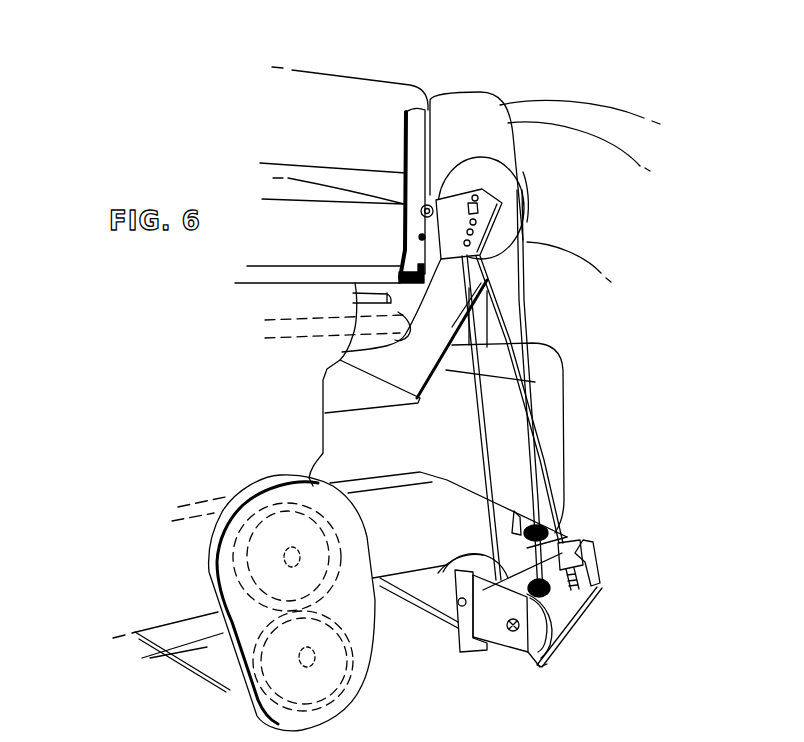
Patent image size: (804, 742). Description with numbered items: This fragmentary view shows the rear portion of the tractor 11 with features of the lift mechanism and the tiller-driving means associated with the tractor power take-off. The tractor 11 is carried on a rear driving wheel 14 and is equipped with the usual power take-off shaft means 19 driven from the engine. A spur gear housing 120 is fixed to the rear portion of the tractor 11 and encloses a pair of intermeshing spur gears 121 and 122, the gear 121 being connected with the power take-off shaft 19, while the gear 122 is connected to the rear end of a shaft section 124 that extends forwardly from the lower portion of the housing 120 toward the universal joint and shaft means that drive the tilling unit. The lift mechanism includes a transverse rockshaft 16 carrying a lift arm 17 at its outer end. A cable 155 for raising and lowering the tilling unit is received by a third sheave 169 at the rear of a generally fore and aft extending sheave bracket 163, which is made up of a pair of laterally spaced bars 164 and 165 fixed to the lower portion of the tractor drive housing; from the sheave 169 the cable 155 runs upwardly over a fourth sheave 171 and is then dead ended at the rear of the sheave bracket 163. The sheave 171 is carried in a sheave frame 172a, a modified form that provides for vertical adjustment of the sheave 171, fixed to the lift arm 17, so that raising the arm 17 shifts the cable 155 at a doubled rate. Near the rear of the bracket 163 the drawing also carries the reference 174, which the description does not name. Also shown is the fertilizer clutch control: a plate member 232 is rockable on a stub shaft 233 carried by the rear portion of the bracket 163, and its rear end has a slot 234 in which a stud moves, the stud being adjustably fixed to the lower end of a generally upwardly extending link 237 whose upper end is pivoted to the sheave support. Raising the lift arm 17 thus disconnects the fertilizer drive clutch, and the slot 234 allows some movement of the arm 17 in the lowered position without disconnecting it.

The tractor 11 is at (383, 74).
The rear wheel 14 is at (582, 112).
The rockshaft 16 is at (292, 340).
The lift arm 17 is at (428, 266).
The power take-off shaft means 19 is at (292, 567).
The spur gear housing 120 is at (217, 578).
The spur gear 121 is at (312, 505).
The spur gear 122 is at (343, 682).
The shaft section 124 is at (307, 648).
The cable 155 is at (526, 300).
The sheave bracket 163 is at (420, 577).
The bar 164 is at (512, 641).
The bar 165 is at (545, 633).
The third sheave 169 is at (473, 552).
The fourth sheave 171 is at (503, 185).
The sheave frame 172a is at (448, 200).
The pivot 174 is at (507, 583).
The plate member 232 is at (568, 617).
The stub shaft 233 is at (575, 553).
The slot 234 is at (593, 577).
The link 237 is at (540, 458).